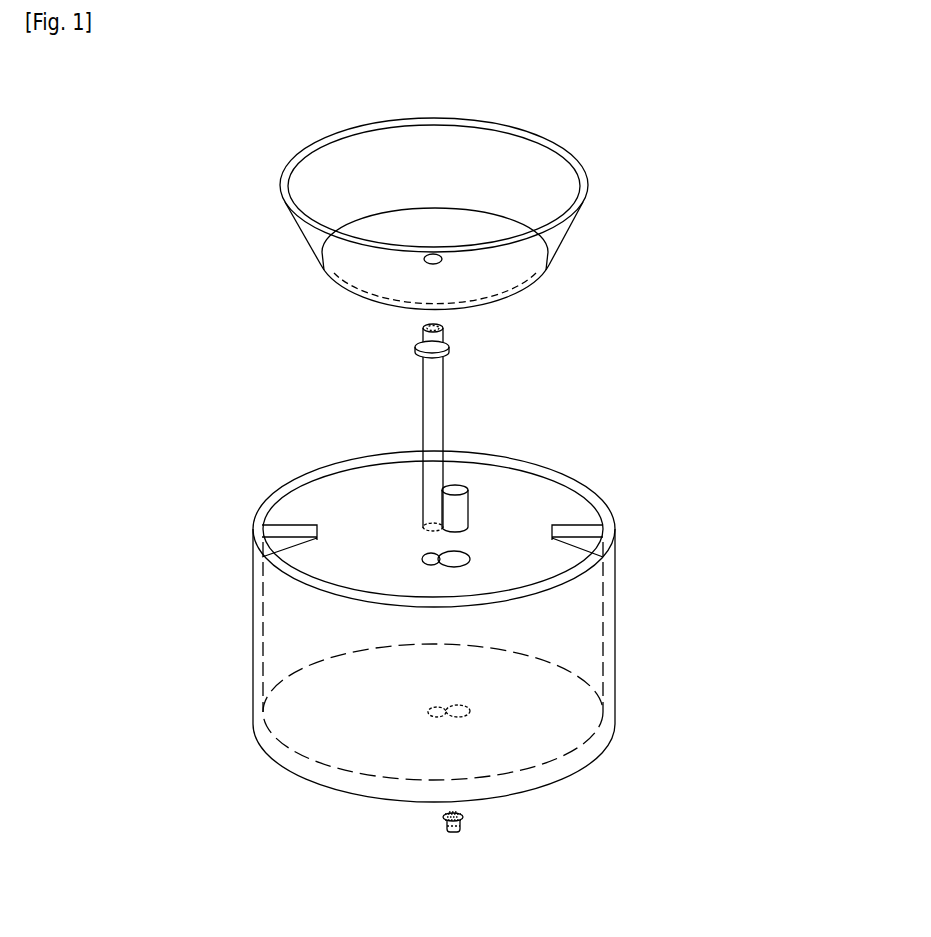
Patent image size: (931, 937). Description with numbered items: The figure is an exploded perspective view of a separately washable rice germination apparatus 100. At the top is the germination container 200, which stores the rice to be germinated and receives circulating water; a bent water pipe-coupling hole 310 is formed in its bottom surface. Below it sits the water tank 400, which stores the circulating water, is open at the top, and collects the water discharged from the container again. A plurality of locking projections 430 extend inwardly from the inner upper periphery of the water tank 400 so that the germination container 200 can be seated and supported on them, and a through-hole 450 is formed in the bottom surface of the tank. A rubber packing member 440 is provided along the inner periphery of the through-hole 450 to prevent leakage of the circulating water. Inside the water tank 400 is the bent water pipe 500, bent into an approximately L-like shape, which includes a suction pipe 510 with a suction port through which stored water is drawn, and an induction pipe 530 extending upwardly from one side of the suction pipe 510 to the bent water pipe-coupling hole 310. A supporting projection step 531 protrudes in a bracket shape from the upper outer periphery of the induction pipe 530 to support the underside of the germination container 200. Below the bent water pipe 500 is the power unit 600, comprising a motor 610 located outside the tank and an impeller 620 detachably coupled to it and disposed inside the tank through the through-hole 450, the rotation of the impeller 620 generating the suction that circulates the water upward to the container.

The separately washable rice germination apparatus 100 is at (647, 200).
The germination container 200 is at (356, 198).
The bent water pipe-coupling hole 310 is at (423, 257).
The water tank 400 is at (401, 623).
The locking projections 430 is at (262, 540).
The rubber packing member 440 is at (422, 555).
The through-hole 450 is at (467, 708).
The bent water pipe 500 is at (396, 408).
The suction pipe 510 is at (461, 506).
The induction pipe 530 is at (441, 402).
The supporting projection step 531 is at (449, 345).
The power unit 600 is at (431, 857).
The motor 610 is at (462, 828).
The impeller 620 is at (463, 817).